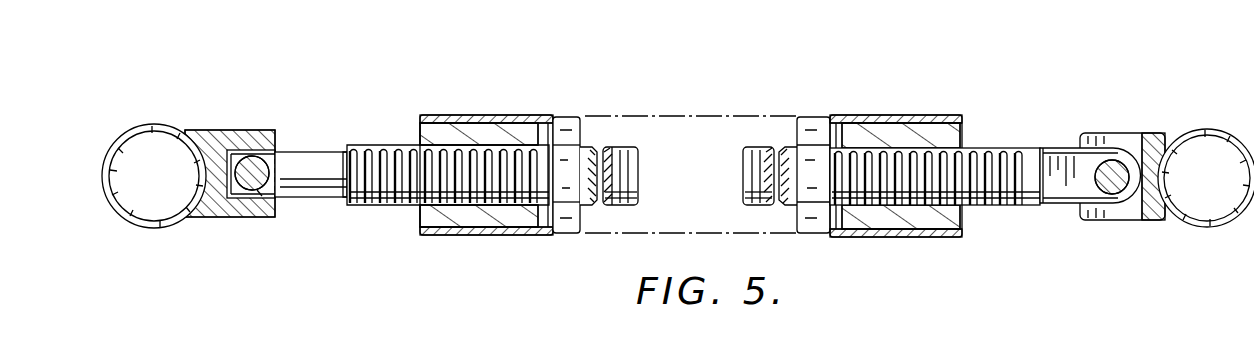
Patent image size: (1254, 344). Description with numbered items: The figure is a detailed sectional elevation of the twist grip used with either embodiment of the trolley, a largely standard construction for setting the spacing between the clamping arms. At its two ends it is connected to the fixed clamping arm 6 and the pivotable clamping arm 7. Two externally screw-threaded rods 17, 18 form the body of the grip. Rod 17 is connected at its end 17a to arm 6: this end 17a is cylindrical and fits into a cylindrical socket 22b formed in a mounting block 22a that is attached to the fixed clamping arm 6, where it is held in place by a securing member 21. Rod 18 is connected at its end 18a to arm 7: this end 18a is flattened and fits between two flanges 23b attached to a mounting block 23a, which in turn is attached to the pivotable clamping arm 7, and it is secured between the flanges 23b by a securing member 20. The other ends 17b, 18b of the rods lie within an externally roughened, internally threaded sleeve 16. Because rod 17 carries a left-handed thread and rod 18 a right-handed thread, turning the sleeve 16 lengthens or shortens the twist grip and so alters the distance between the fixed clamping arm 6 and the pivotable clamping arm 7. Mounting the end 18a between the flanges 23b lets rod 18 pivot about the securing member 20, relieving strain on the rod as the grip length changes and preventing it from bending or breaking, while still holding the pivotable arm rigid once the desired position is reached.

The fixed clamping arm 6 is at (171, 133).
The pivotable clamping arm 7 is at (1227, 144).
The outer sleeve 16 is at (503, 114).
The externally screw-threaded rod 17 is at (368, 205).
The end of rod 17 17a is at (241, 160).
The other end of rod 17 17b is at (618, 150).
The externally screw-threaded rod 18 is at (987, 152).
The end of rod 18 18a is at (1096, 150).
The other end of rod 18 18b is at (756, 150).
The securing member 20 is at (1114, 170).
The securing member 21 is at (248, 160).
The mounting block 22a is at (213, 207).
The cylindrical socket 22b is at (261, 196).
The mounting block 23a is at (1157, 207).
The flanges 23b is at (1128, 212).